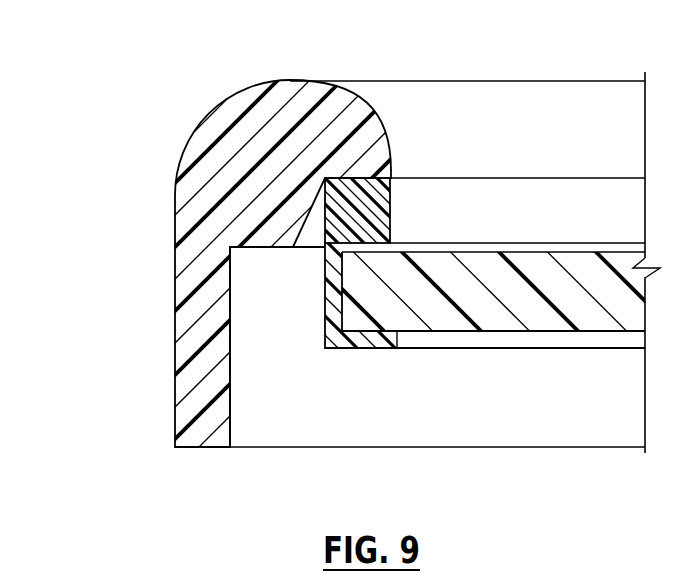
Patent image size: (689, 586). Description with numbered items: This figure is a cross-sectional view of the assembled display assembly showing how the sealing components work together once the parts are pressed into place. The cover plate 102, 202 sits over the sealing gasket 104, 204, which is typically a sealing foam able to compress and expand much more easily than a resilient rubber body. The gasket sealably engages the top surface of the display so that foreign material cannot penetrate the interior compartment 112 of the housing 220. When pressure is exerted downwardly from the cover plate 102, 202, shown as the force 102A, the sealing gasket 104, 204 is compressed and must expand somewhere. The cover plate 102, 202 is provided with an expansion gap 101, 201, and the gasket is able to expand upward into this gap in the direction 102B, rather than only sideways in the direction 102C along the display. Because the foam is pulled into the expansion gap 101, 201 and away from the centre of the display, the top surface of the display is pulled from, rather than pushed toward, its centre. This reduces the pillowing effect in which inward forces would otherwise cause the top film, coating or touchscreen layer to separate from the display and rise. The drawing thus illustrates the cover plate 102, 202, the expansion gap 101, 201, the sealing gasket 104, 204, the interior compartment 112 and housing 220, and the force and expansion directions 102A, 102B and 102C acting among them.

The cover plate 102 is at (198, 304).
The cover plate 202 is at (207, 238).
The force 102A is at (271, 12).
The direction 102B is at (370, 162).
The direction 102C is at (424, 55).
The expansion gap 101 is at (303, 246).
The expansion gap 201 is at (297, 346).
The sealing gasket 104 is at (375, 209).
The sealing gasket 204 is at (470, 217).
The interior compartment 112 is at (360, 337).
The housing 220 is at (487, 293).